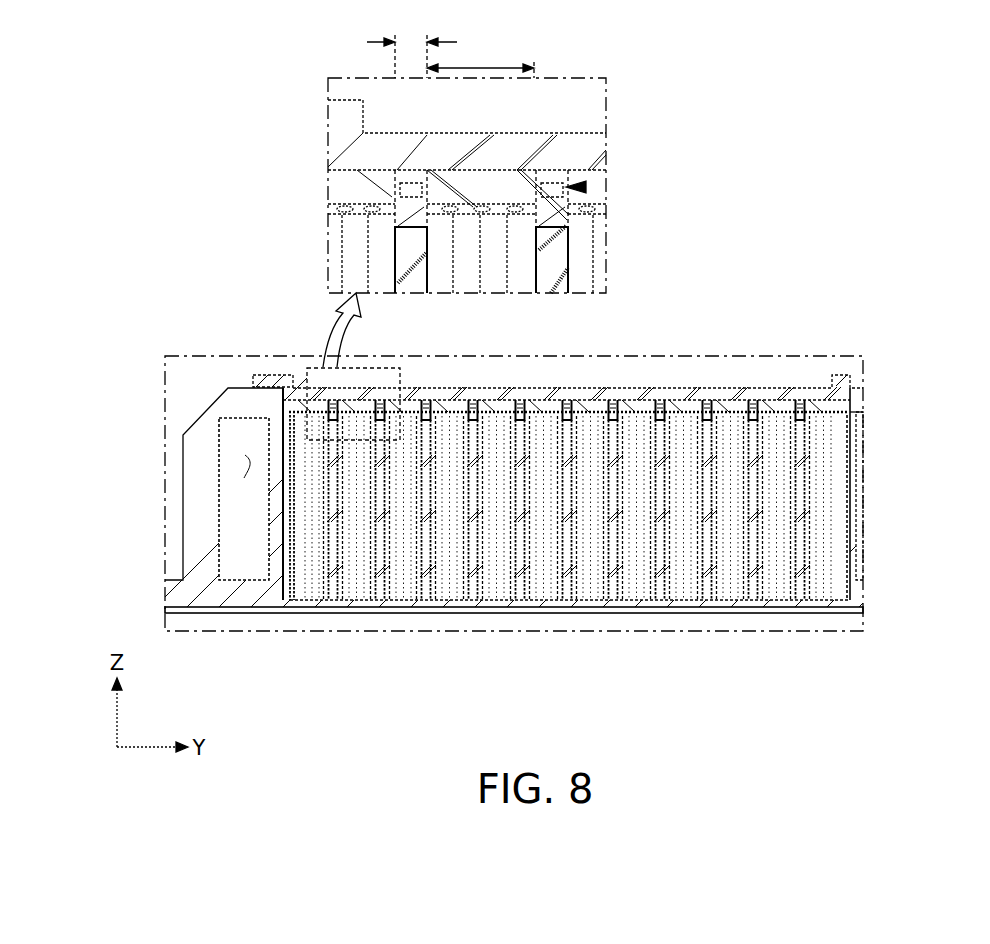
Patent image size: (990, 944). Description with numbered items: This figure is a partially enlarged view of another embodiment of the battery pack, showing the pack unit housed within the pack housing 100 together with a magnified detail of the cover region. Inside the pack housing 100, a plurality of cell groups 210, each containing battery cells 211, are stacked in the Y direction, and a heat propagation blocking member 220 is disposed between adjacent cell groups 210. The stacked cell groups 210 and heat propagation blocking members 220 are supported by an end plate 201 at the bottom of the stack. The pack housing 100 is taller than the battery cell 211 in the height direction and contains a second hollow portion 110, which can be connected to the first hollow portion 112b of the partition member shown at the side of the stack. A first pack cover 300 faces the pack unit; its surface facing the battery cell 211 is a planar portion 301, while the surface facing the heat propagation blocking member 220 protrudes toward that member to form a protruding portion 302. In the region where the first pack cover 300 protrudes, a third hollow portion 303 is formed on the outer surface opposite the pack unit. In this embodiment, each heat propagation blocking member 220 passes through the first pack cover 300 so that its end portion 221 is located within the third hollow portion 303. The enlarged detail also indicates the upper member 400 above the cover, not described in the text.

The pack housing 100 is at (200, 518).
The second hollow portion 110 is at (245, 460).
The first hollow portion 112b is at (862, 552).
The end plate 201 is at (288, 612).
The cell group 210 is at (320, 612).
The battery cell 211 is at (838, 488).
The heat propagation blocking member 220 is at (428, 613).
The end portion 221 is at (604, 214).
The first pack cover 300 is at (726, 406).
The planar portion 301 is at (480, 56).
The protruding portion 302 is at (412, 48).
The third hollow portion 303 is at (565, 402).
The bus bar holder 400 is at (634, 394).